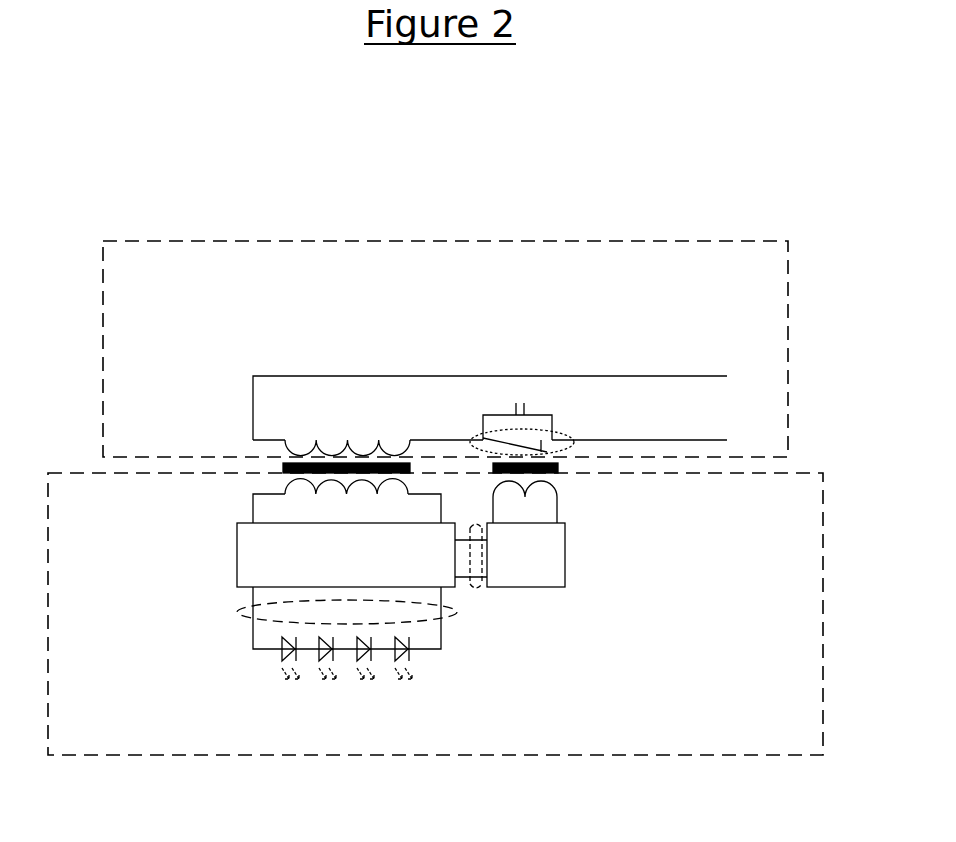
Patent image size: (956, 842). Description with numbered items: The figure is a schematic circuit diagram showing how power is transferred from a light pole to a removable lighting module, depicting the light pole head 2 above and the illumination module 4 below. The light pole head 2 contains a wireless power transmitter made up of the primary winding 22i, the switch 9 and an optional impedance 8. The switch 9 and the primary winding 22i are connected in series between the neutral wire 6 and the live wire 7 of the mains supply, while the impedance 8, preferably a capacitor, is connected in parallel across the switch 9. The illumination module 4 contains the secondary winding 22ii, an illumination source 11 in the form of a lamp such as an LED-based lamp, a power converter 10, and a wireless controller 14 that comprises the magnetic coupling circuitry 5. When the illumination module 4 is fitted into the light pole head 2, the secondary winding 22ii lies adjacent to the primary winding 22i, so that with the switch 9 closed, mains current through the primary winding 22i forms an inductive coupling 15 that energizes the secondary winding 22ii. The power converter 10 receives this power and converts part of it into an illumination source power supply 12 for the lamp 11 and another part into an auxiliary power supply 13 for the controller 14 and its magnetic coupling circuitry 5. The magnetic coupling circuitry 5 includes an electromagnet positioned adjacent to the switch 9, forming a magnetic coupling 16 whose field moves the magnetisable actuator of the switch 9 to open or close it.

The light pole head 2 is at (738, 241).
The illumination module 4 is at (693, 758).
The magnetic coupling circuitry 5 is at (538, 490).
The neutral wire 6 is at (668, 376).
The live wire 7 is at (677, 440).
The impedance 8 is at (518, 403).
The switch 9 is at (567, 435).
The power converter 10 is at (237, 563).
The illumination source 11 is at (283, 652).
The illumination source power supply 12 is at (248, 612).
The auxiliary power supply 13 is at (480, 594).
The wireless controller 14 is at (565, 575).
The inductive coupling 15 is at (283, 469).
The magnetic coupling 16 is at (558, 470).
The primary winding 22i is at (299, 449).
The secondary winding 22ii is at (300, 483).